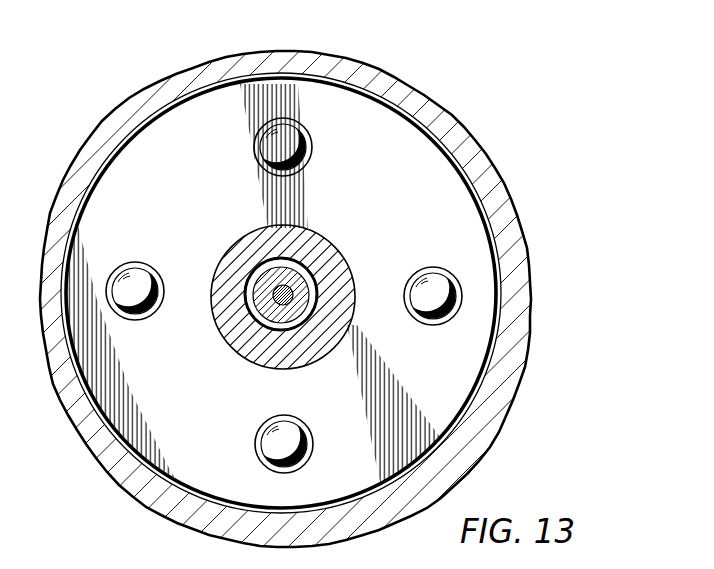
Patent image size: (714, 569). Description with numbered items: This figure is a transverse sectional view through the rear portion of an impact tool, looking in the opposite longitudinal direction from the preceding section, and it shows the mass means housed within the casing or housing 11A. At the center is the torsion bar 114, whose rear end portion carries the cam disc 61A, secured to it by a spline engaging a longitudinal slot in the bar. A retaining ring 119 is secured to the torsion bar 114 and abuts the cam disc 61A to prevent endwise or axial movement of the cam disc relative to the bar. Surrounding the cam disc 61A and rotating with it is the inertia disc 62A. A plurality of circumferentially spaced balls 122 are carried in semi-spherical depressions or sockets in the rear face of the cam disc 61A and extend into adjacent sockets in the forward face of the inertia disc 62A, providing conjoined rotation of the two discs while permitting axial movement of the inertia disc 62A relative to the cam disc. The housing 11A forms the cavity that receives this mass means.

The casing or housing 11A is at (508, 211).
The inertia disc 62A is at (462, 376).
The cam disc 61A is at (238, 335).
The retaining ring 119 is at (307, 285).
The torsion bar 114 is at (280, 287).
The balls 122 is at (294, 136).